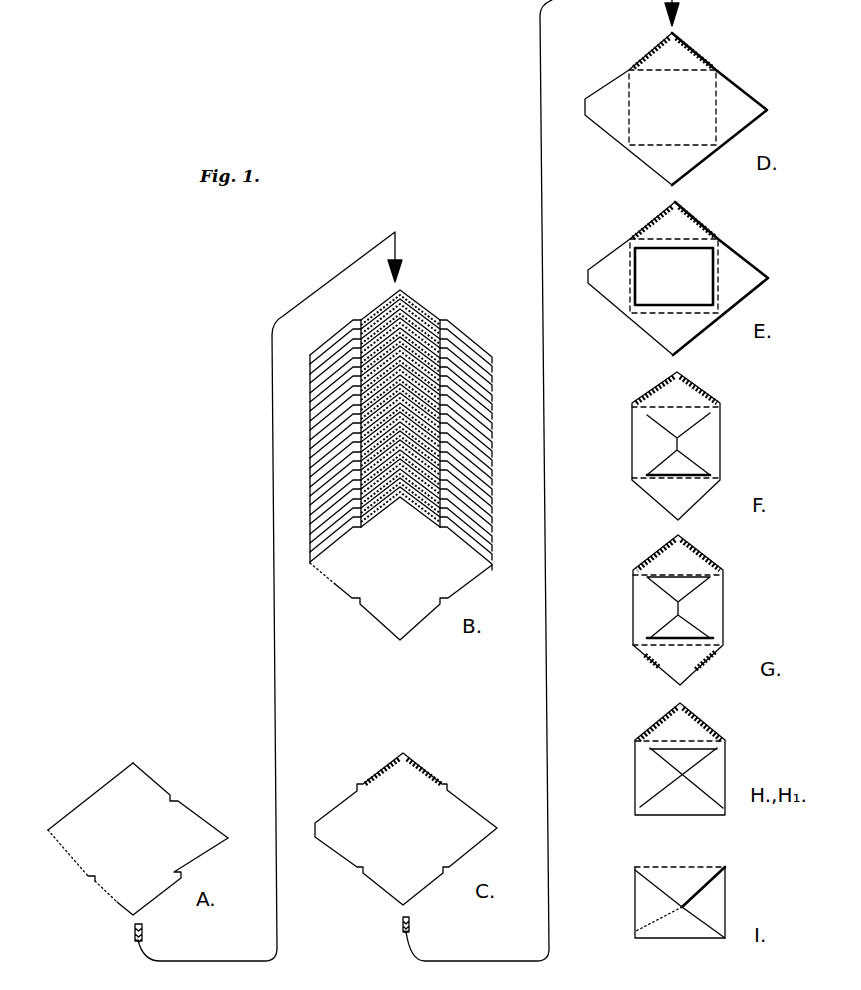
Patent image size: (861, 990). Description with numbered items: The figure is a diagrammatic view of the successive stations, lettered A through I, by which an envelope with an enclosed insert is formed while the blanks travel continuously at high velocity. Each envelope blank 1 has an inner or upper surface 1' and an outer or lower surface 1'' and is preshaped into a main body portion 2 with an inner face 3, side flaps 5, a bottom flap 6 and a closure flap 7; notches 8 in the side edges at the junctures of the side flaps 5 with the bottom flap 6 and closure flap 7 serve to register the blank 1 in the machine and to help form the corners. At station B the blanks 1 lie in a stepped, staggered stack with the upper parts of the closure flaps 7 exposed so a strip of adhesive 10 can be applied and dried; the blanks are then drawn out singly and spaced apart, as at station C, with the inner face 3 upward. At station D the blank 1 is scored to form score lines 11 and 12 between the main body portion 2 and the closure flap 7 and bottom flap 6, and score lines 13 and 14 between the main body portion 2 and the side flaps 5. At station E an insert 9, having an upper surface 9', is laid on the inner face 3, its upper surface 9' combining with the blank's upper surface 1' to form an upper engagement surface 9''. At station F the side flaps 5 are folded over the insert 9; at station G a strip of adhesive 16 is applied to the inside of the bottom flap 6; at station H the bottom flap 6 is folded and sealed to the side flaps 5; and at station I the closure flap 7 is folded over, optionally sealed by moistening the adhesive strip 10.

The envelope blank 1 is at (138, 849).
The inner or upper surface 1' is at (202, 796).
The outer or lower surface 1'' is at (475, 622).
The main body portion 2 is at (104, 848).
The inner face 3 is at (118, 886).
The side flaps 5 is at (209, 832).
The bottom flap 6 is at (132, 918).
The closure flap 7 is at (128, 770).
The notches 8 is at (95, 797).
The insert 9 is at (678, 278).
The upper surface of the insert 9' is at (734, 303).
The upper engagement surface 9'' is at (601, 308).
The strip of adhesive 10 is at (424, 296).
The score line 11 is at (700, 70).
The score line 12 is at (700, 150).
The score line 13 is at (624, 82).
The score line 14 is at (718, 98).
The strip of adhesive 16 is at (668, 668).